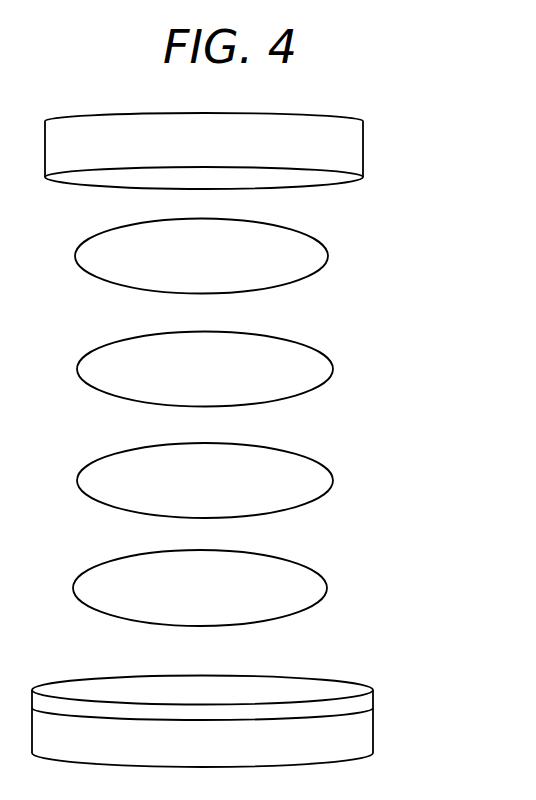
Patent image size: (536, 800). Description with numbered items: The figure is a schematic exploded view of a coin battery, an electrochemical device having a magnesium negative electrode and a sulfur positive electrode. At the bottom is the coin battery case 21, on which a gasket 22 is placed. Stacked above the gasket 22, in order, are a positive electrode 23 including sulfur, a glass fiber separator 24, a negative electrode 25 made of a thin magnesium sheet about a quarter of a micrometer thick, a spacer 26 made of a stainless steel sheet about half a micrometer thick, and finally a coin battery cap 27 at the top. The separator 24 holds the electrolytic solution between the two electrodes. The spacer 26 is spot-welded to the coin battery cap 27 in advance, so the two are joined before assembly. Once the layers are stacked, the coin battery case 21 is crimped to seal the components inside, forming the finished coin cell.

The coin battery case 21 is at (362, 730).
The gasket 22 is at (362, 705).
The positive electrode 23 is at (315, 588).
The glass fiber separator 24 is at (317, 482).
The negative electrode 25 is at (317, 370).
The spacer 26 is at (315, 260).
The coin battery cap 27 is at (347, 152).